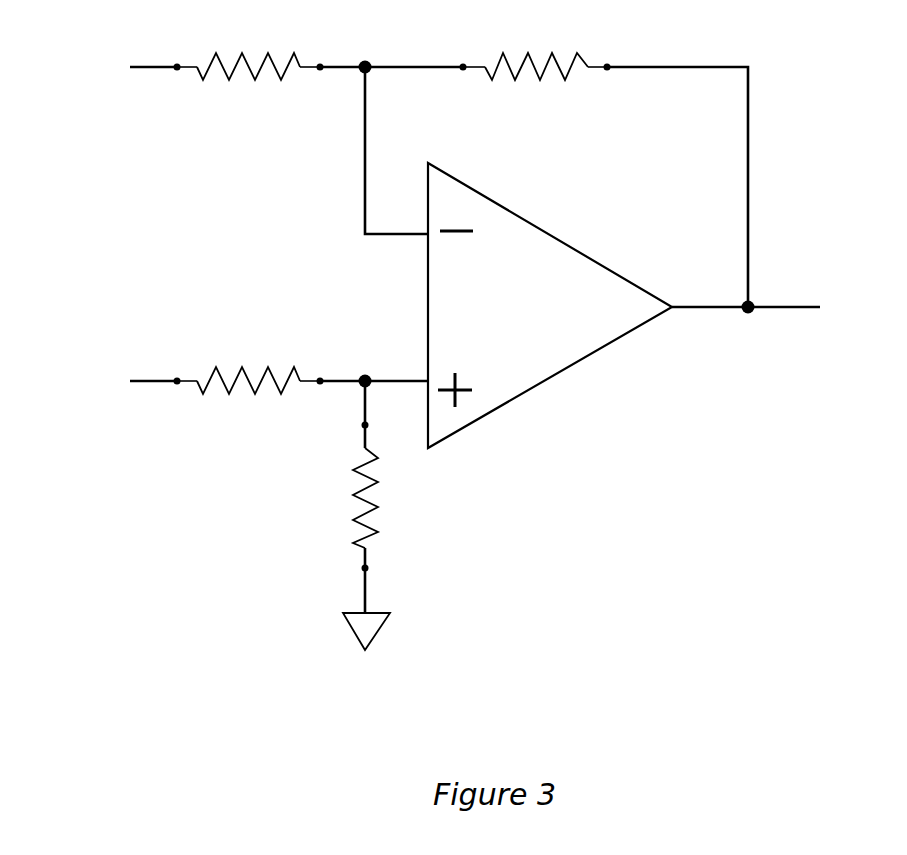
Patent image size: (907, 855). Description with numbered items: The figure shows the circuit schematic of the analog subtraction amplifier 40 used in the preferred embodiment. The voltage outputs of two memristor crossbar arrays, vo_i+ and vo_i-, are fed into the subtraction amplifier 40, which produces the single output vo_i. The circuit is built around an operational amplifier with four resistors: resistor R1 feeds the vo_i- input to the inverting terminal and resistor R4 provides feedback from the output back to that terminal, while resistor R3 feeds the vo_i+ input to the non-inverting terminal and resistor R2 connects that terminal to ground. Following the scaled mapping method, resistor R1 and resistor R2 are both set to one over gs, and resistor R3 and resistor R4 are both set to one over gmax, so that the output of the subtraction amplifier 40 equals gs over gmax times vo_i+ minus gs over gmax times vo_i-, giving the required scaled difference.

The subtraction amplifier 40 is at (469, 331).
The resistor R1 is at (248, 46).
The resistor R2 is at (340, 498).
The resistor R3 is at (248, 360).
The resistor R4 is at (535, 46).